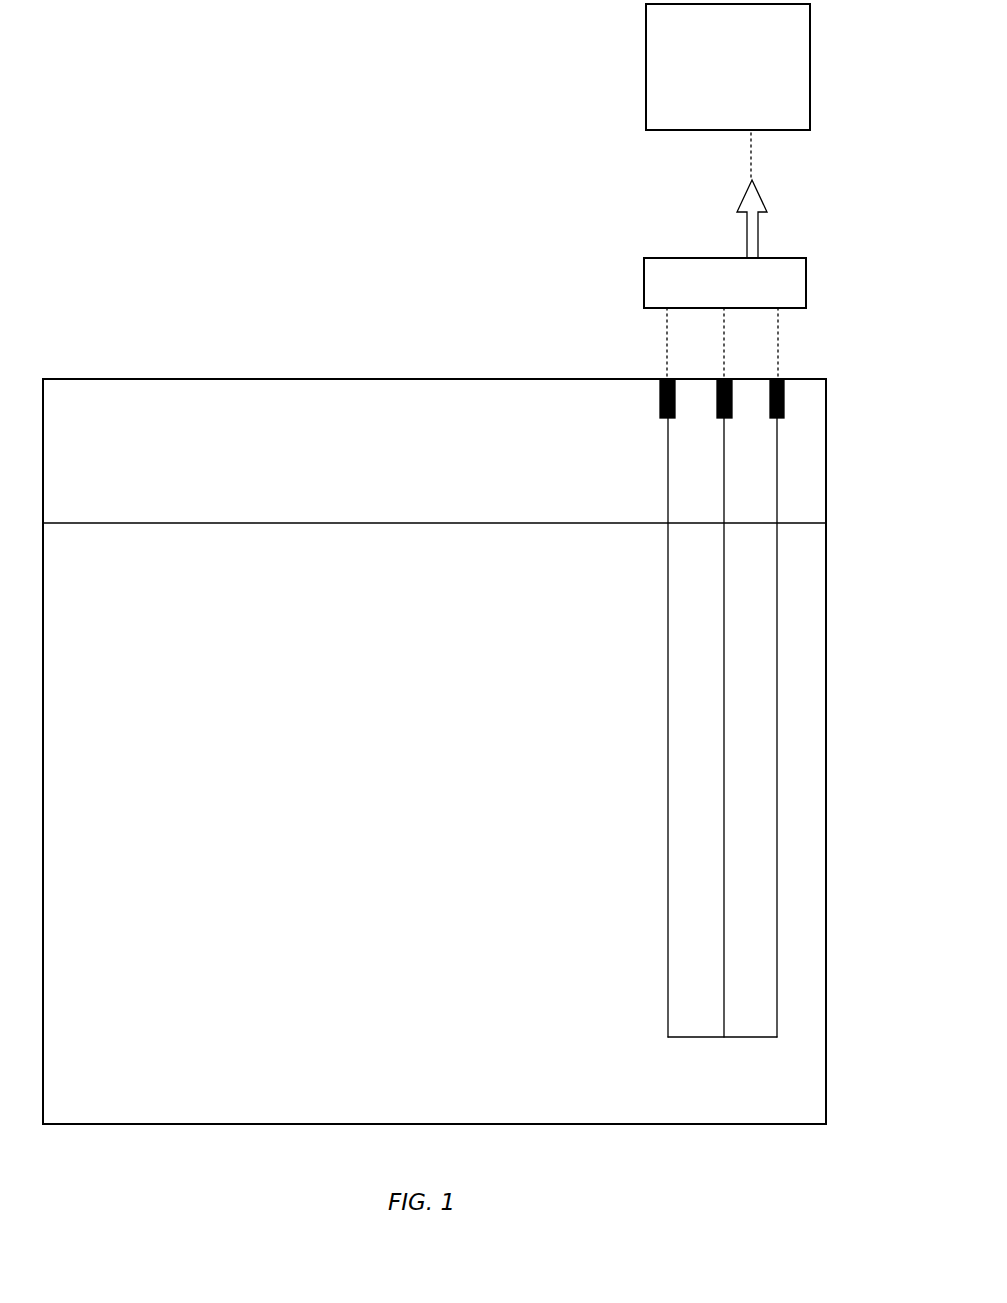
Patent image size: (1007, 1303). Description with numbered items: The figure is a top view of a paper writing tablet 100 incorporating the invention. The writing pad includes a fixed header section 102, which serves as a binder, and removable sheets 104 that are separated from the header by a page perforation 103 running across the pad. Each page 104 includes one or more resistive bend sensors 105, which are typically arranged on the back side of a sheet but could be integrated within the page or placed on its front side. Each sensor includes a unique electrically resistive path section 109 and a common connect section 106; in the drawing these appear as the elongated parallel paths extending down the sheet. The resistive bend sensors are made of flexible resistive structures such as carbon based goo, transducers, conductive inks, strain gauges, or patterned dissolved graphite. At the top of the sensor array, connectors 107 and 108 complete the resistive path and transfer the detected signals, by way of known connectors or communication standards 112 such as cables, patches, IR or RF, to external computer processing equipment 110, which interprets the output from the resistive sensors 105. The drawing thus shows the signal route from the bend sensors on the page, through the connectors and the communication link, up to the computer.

The paper writing tablet 100 is at (378, 170).
The fixed header section 102 is at (146, 395).
The page perforation 103 is at (236, 522).
The removable sheets 104 is at (157, 1130).
The resistive bend sensors 105 is at (651, 707).
The common connect section 106 is at (778, 618).
The connector 107 is at (786, 395).
The connectors 108 is at (660, 395).
The electrically resistive path section 109 is at (667, 641).
The external computer processing equipment 110 is at (752, 96).
The communication standards 112 is at (748, 298).